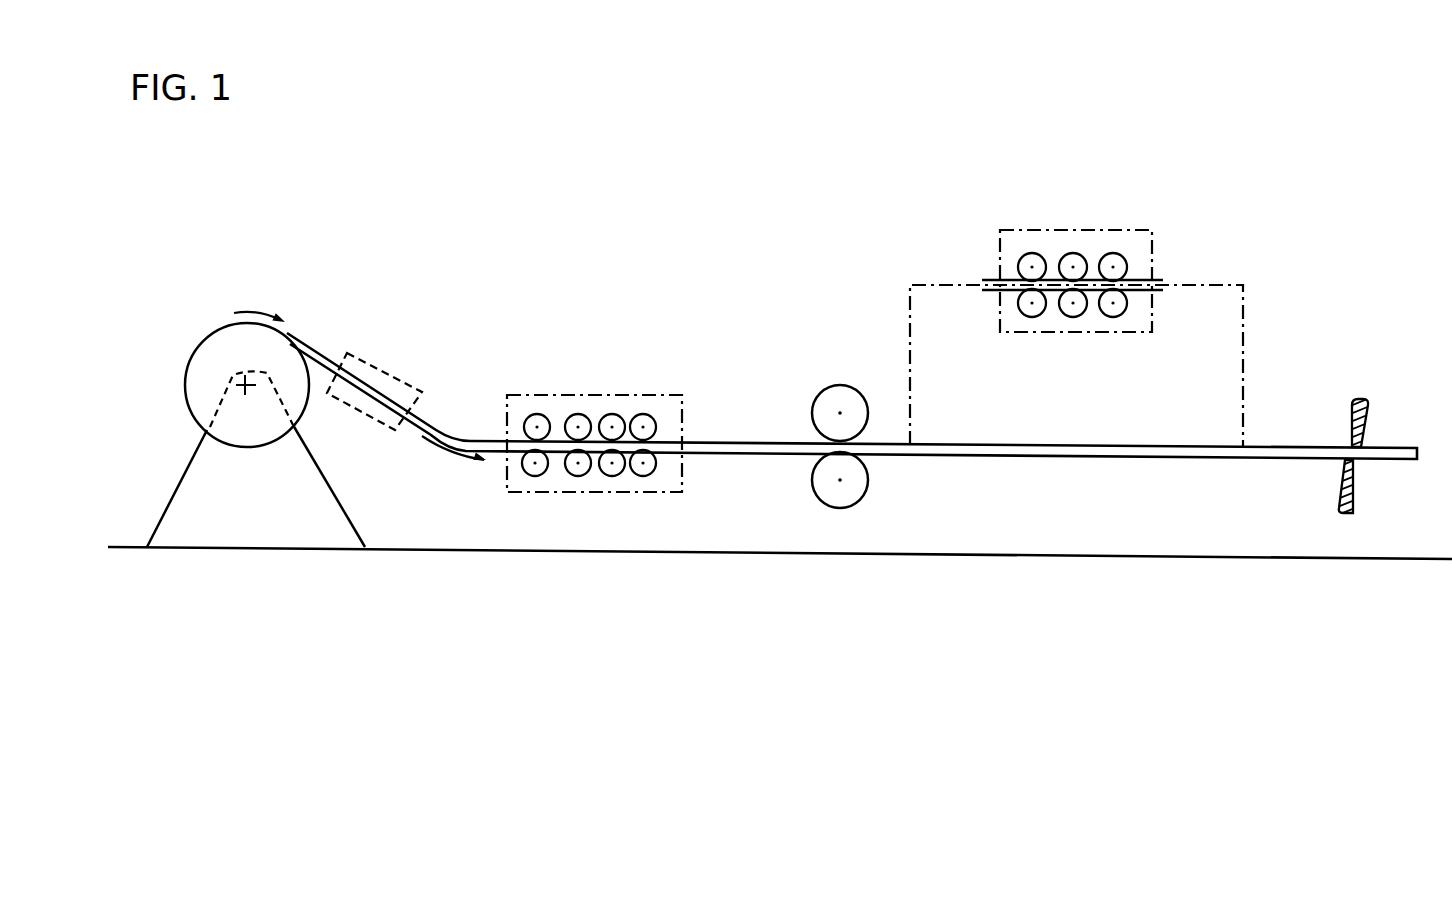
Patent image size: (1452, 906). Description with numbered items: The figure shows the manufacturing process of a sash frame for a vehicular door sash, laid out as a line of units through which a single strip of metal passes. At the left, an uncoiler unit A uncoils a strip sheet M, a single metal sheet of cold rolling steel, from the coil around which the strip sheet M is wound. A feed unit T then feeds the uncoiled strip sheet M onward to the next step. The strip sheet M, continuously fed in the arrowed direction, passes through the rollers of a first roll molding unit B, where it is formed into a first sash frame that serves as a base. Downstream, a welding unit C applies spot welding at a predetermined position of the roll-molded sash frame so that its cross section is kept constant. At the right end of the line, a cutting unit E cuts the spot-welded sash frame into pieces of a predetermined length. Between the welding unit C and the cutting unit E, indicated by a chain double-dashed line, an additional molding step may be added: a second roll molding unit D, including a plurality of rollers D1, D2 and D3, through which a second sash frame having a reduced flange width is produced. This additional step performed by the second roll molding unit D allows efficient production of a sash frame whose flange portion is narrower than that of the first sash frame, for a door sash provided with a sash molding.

The uncoiler unit A is at (218, 312).
The strip sheet M is at (313, 352).
The feed unit T is at (383, 370).
The first roll molding unit B is at (597, 395).
The welding unit C is at (822, 380).
The second roll molding unit D is at (1076, 293).
The roller D1 is at (1032, 256).
The roller D2 is at (1073, 258).
The roller D3 is at (1113, 256).
The cutting unit E is at (1362, 385).